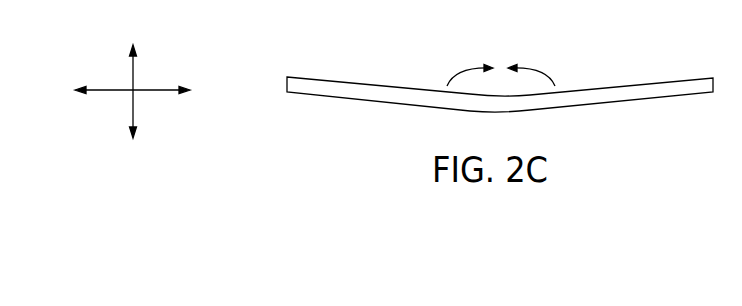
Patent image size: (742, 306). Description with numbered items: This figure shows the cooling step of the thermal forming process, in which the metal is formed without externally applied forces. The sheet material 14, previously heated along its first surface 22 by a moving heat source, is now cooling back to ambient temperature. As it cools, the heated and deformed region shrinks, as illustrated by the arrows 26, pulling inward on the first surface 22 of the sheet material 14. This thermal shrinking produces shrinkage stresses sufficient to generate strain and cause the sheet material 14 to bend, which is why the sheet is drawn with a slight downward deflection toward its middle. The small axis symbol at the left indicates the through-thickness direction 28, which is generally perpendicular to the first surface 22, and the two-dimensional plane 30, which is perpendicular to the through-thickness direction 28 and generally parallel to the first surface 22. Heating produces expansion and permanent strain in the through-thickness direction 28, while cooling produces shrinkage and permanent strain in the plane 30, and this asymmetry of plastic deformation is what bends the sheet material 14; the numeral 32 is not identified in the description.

The sheet material 14 is at (700, 87).
The first surface 22 is at (645, 82).
The arrows 26 is at (460, 67).
The through-thickness direction 28 is at (135, 102).
The two-dimensional plane 30 is at (150, 90).
The bottom surface 32 is at (648, 99).